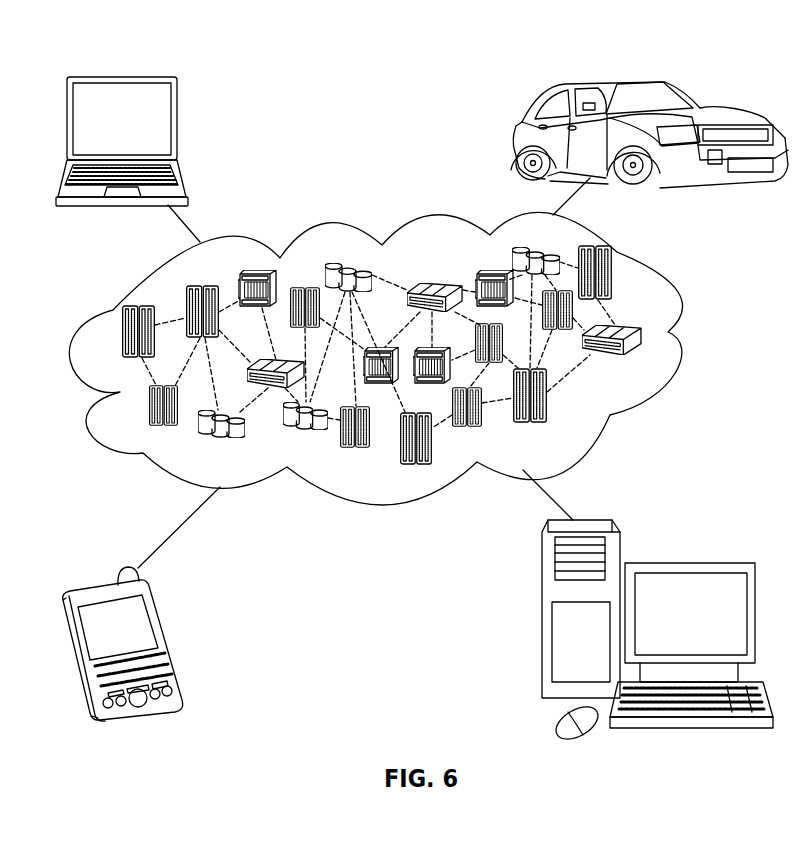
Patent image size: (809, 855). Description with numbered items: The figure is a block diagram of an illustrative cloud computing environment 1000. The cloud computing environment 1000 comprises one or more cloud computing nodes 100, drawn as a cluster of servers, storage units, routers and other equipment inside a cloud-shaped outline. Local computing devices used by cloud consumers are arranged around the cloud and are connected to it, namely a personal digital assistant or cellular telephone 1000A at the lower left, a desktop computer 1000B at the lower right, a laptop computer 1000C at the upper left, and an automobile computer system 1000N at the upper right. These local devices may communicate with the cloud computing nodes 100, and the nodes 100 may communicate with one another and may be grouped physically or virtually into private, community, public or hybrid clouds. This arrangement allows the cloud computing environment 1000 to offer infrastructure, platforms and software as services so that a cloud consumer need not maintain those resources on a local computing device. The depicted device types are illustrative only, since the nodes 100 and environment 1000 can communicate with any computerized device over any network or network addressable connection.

The laptop computer 1000C is at (179, 128).
The automobile computer system 1000N is at (518, 140).
The cloud computing environment 1000 is at (412, 358).
The cloud computing nodes 100 is at (645, 363).
The personal digital assistant (PDA) or cellular telephone 1000A is at (170, 638).
The desktop computer 1000B is at (687, 563).